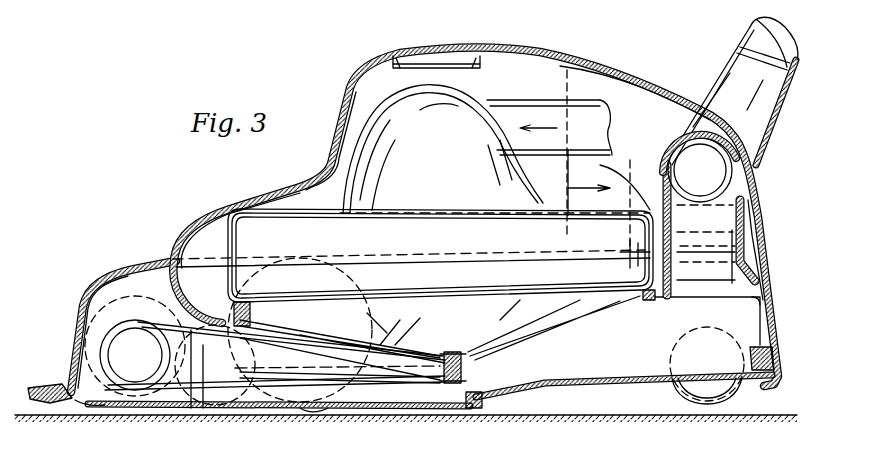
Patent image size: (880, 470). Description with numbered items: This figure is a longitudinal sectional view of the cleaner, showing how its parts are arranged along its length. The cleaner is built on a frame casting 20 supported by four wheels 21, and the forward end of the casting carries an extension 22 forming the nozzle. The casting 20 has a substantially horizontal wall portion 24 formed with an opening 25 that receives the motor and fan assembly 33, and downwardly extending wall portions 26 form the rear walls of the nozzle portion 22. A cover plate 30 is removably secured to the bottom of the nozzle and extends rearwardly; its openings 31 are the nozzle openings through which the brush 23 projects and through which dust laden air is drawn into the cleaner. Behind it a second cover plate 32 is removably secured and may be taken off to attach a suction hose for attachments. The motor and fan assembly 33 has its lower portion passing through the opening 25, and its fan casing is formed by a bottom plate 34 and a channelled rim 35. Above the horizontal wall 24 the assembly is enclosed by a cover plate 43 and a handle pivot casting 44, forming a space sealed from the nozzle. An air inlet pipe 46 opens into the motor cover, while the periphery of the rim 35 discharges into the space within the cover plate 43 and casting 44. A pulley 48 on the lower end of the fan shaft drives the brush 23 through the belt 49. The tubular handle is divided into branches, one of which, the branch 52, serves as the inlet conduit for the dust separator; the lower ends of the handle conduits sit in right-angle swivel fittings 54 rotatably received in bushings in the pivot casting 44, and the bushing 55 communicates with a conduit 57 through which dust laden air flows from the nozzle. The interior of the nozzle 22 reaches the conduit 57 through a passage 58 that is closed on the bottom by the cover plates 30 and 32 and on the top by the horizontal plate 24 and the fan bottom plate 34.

The frame casting 20 is at (70, 306).
The wheels 21 is at (318, 415).
The extension forming a nozzle 22 is at (74, 345).
The brush 23 is at (148, 409).
The horizontal wall portion 24 is at (214, 245).
The opening 25 is at (291, 285).
The downwardly extending wall portions 26 is at (221, 403).
The cover plate 30 is at (66, 393).
The openings 31 is at (107, 411).
The cover plate 32 is at (663, 380).
The motor and fan assembly 33 is at (366, 107).
The bottom plate 34 is at (552, 313).
The channelled rim 35 is at (405, 229).
The cover plate 43 is at (328, 134).
The handle pivot casting 44 is at (620, 83).
The air inlet pipe 46 is at (518, 103).
The pulley 48 is at (452, 384).
The belt 49 is at (410, 377).
The branch 52 is at (752, 34).
The right-angle swivel fittings 54 is at (728, 79).
The bushing 55 is at (738, 188).
The conduit 57 is at (750, 220).
The passage 58 is at (608, 352).